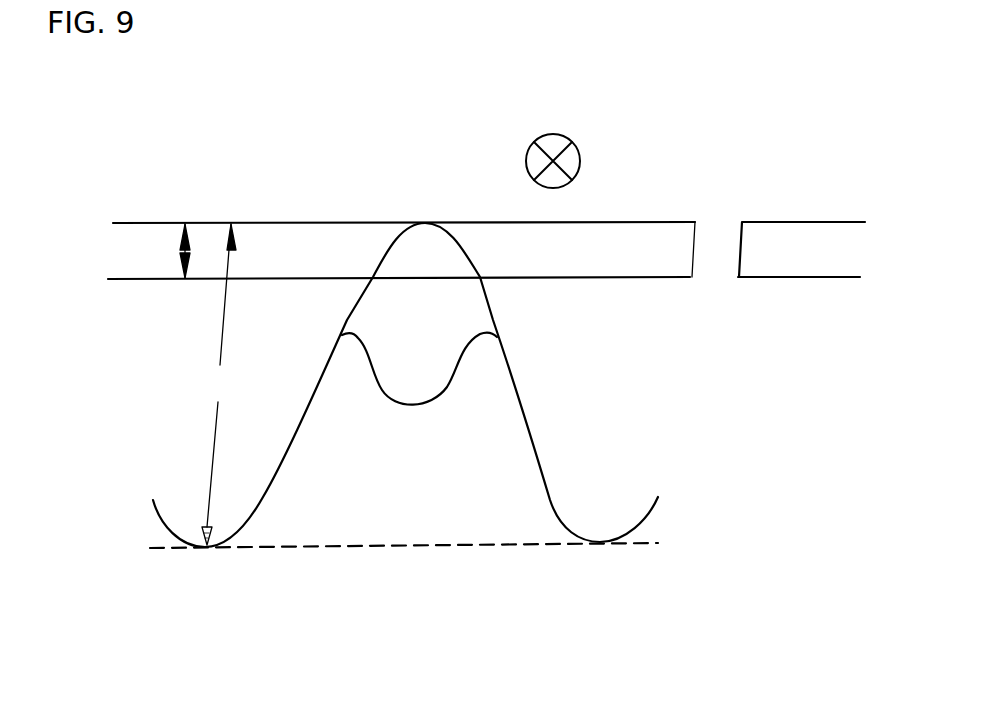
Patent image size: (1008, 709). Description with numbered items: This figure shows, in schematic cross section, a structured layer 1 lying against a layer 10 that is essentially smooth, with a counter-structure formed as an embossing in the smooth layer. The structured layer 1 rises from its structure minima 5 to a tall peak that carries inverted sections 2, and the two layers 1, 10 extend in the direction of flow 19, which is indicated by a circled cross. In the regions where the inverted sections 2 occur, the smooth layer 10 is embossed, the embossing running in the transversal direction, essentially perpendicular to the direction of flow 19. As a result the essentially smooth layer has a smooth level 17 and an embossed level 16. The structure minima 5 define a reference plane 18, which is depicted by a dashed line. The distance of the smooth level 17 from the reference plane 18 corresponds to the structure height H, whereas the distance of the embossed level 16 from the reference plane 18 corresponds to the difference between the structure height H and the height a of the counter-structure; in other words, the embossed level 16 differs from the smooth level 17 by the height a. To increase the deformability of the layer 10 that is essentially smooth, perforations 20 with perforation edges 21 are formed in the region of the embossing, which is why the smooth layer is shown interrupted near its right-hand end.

The layer 1 is at (175, 540).
The inverted sections 2 is at (413, 407).
The structure minima 5 is at (207, 548).
The layer that is essentially smooth 10 is at (623, 223).
The embossed level 16 is at (127, 280).
The smooth level 17 is at (134, 225).
The reference plane 18 is at (333, 548).
The direction of flow 19 is at (570, 138).
The perforations 20 is at (718, 235).
The perforation edges 21 is at (738, 262).
The height of the counter-structure a is at (188, 248).
The structure height H is at (219, 384).